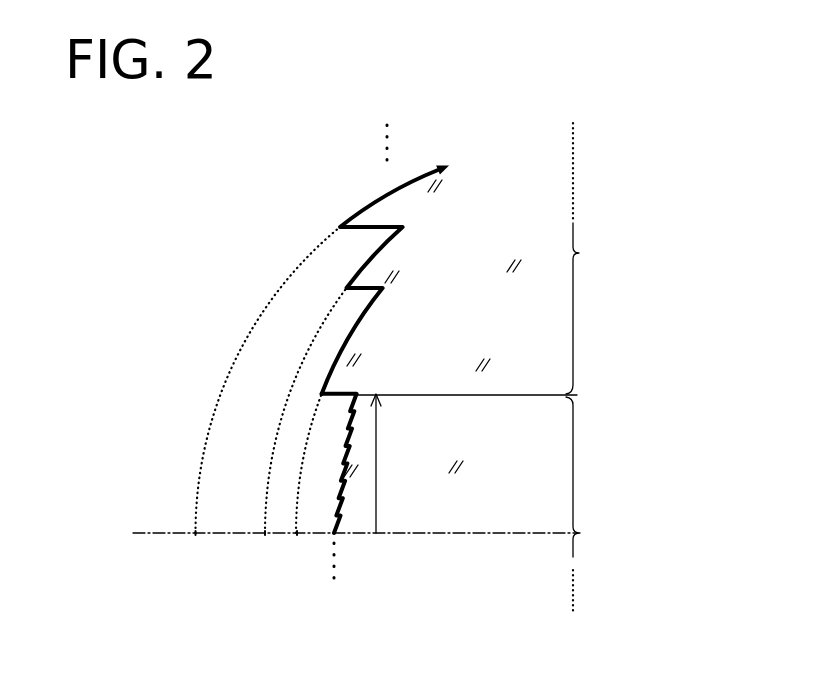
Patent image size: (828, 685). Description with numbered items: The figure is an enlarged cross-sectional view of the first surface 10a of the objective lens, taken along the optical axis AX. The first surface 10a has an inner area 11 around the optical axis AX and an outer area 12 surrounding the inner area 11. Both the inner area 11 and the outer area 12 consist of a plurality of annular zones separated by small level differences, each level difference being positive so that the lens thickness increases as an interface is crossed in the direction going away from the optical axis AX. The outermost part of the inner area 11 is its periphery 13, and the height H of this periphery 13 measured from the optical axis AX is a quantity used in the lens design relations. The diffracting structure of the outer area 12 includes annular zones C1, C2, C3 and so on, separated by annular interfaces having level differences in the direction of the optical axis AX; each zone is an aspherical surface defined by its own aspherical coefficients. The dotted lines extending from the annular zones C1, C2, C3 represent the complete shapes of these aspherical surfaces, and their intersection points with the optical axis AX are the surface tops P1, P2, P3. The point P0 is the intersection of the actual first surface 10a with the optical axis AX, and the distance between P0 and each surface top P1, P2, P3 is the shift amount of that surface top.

The first surface 10a is at (339, 143).
The inner area 11 is at (590, 505).
The outer area 12 is at (590, 258).
The periphery 13 is at (485, 393).
The optical axis AX is at (336, 535).
The height of the periphery H is at (377, 480).
The annular zone C1 is at (334, 365).
The annular zone C2 is at (361, 271).
The annular zone C3 is at (358, 210).
The intersection point P0 is at (334, 535).
The surface top P1 is at (299, 534).
The surface top P2 is at (263, 534).
The surface top P3 is at (196, 534).